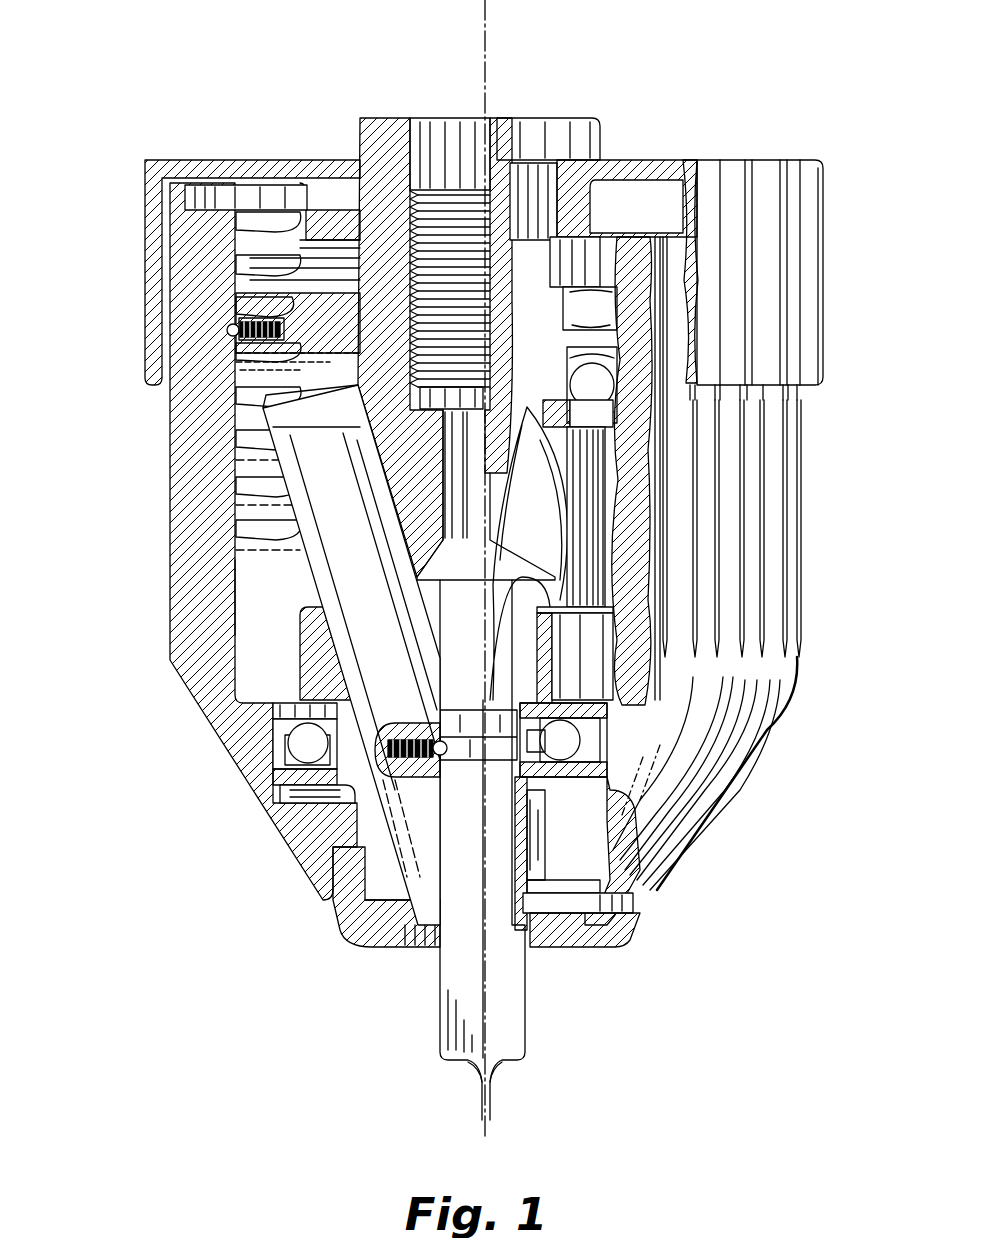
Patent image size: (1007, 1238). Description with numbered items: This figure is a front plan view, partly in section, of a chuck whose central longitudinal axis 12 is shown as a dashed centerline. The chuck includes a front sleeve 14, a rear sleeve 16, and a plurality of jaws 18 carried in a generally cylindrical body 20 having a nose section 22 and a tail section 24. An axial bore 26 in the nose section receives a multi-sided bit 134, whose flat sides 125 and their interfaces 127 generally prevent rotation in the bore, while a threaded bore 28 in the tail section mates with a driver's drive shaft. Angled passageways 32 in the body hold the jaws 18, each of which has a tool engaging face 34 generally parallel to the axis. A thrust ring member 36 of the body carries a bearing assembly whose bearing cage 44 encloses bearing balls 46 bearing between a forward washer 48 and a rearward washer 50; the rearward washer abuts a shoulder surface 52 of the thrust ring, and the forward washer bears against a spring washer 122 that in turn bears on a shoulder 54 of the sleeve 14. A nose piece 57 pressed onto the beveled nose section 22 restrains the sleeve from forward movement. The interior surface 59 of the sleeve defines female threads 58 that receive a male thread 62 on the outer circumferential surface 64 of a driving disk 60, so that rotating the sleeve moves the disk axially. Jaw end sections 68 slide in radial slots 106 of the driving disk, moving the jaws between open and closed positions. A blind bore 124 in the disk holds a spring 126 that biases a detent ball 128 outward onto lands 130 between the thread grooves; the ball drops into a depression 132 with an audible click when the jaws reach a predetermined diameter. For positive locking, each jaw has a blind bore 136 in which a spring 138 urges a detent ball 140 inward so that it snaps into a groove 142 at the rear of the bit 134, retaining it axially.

The central longitudinal axis 12 is at (490, 20).
The front sleeve 14 is at (168, 480).
The rear sleeve 16 is at (143, 170).
The jaws 18 is at (238, 595).
The body 20 is at (605, 458).
The nose section 22 is at (340, 880).
The tail section 24 is at (360, 145).
The axial bore 26 is at (413, 947).
The threaded bore 28 is at (440, 210).
The passageways 32 is at (410, 780).
The tool engaging face 34 is at (548, 792).
The thrust ring member 36 is at (298, 645).
The bearing cage 44 is at (285, 738).
The bearing balls 46 is at (292, 755).
The forward washer 48 is at (300, 775).
The rearward washer 50 is at (272, 712).
The shoulder surface 52 is at (292, 706).
The shoulder 54 is at (312, 800).
The nose piece 57 is at (628, 920).
The female threads 58 is at (228, 285).
The interior surface 59 is at (232, 248).
The driving disk 60 is at (655, 266).
The male thread 62 is at (218, 305).
The outer circumferential surface 64 is at (590, 316).
The jaw end sections 68 is at (238, 400).
The radial slots 106 is at (250, 368).
The spring washer 122 is at (620, 815).
The blind bore 124 is at (278, 320).
The flat sides 125 is at (460, 1030).
The spring 126 is at (258, 318).
The interfaces 127 is at (527, 1043).
The detent ball 128 is at (226, 330).
The lands 130 is at (228, 525).
The depression 132 is at (230, 338).
The multi-sided bit 134 is at (527, 998).
The blind bore 136 is at (530, 690).
The spring 138 is at (340, 820).
The detent ball 140 is at (643, 757).
The groove 142 is at (620, 745).